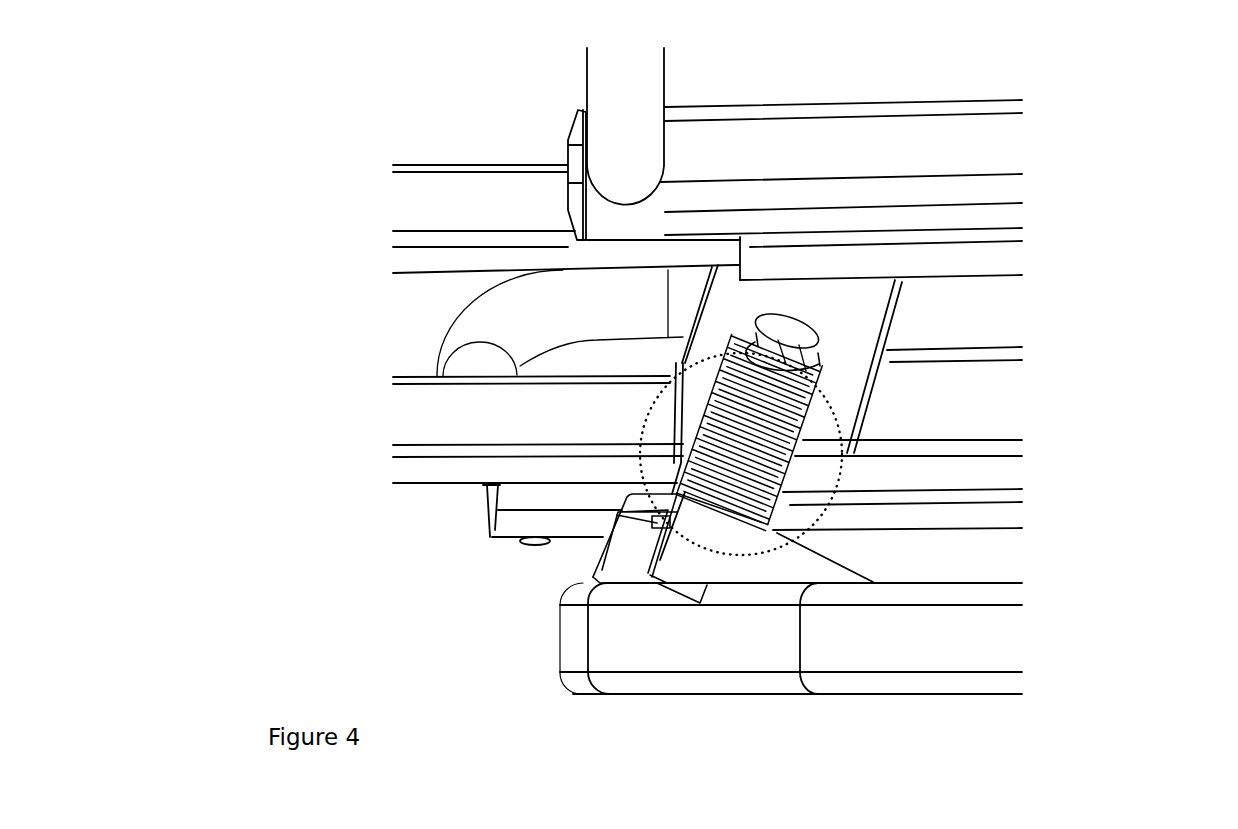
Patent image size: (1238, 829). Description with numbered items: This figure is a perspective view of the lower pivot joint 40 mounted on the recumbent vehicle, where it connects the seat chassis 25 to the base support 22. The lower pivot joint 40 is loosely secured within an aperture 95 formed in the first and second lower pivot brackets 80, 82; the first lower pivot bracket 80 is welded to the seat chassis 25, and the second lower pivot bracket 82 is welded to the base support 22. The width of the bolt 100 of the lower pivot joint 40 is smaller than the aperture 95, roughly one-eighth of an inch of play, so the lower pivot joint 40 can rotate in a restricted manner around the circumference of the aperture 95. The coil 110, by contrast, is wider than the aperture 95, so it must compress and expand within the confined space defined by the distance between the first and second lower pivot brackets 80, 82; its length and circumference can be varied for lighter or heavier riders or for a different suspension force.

The base support 22 is at (918, 673).
The seat chassis 25 is at (780, 145).
The lower pivot joint 40 is at (800, 440).
The first lower pivot bracket 80 is at (847, 310).
The second lower pivot bracket 82 is at (600, 575).
The aperture 95 is at (757, 325).
The bolt 100 is at (783, 345).
The coil 110 is at (683, 463).